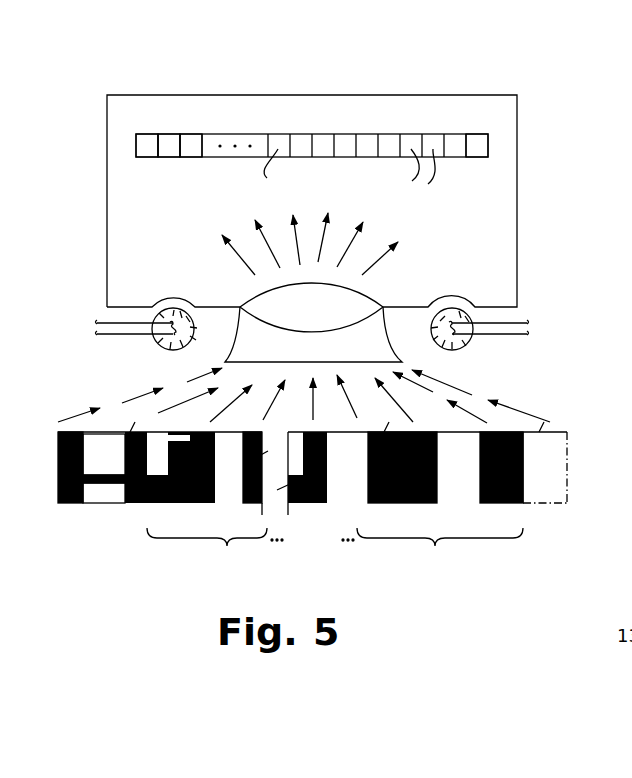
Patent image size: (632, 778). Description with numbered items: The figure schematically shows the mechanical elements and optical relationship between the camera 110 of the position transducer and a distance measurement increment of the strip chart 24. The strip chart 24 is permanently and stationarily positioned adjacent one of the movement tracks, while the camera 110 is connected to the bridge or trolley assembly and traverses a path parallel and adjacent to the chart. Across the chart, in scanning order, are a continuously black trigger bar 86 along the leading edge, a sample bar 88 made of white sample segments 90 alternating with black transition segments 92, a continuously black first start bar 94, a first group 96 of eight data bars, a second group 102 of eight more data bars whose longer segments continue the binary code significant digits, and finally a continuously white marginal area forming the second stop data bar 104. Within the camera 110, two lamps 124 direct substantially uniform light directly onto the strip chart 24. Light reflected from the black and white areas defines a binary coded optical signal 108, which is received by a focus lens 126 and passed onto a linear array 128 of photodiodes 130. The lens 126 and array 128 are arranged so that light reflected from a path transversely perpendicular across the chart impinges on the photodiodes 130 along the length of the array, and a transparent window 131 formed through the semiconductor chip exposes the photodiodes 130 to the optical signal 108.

The strip chart 24 is at (570, 491).
The trigger bar 86 is at (70, 504).
The sample bar 88 is at (112, 498).
The sample segments 90 is at (97, 481).
The transition segments 92 is at (88, 449).
The first start bar 94 is at (137, 503).
The first group of data bars 96 is at (215, 503).
The second group of data bars 102 is at (405, 503).
The second stop data bar 104 is at (545, 507).
The optical signal 108 is at (368, 252).
The camera 110 is at (519, 235).
The lamps 124 is at (158, 345).
The focus lens 126 is at (350, 296).
The linear array 128 is at (495, 146).
The photodiodes 130 is at (479, 142).
The transparent window 131 is at (390, 131).